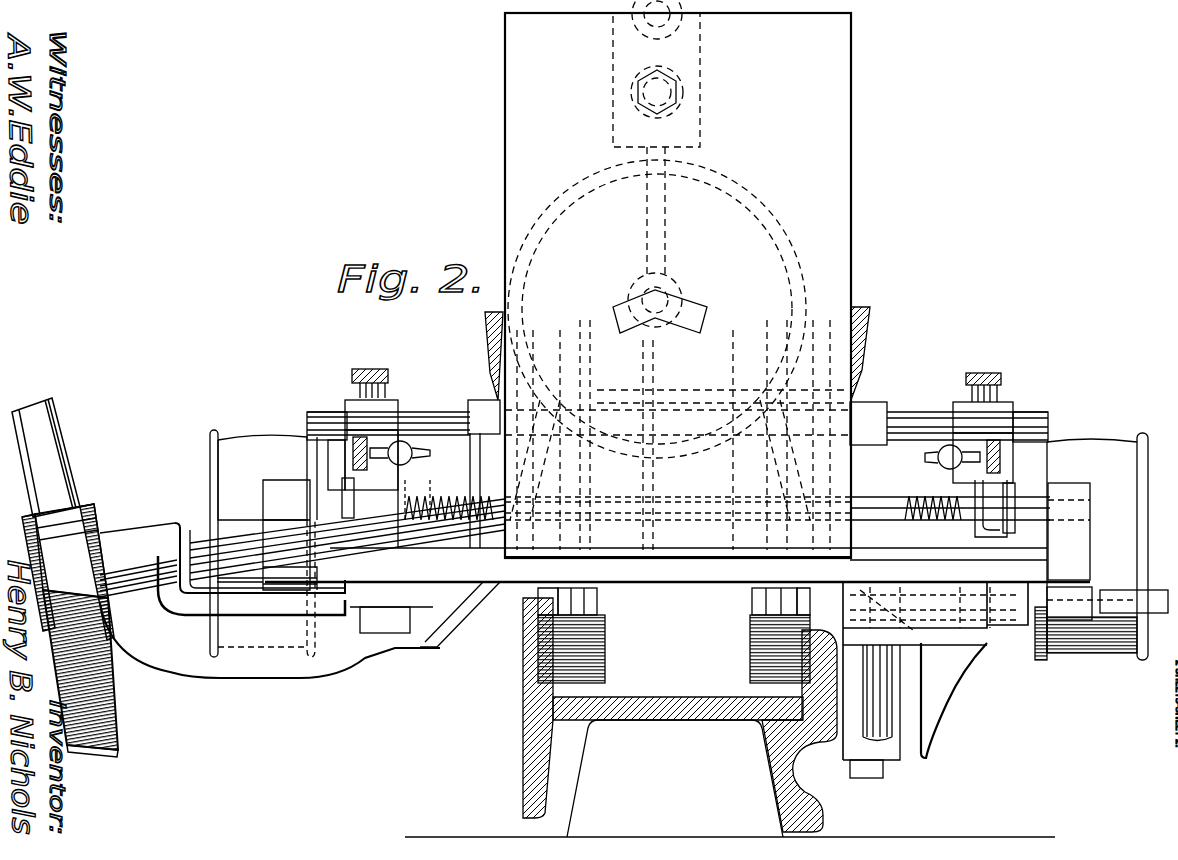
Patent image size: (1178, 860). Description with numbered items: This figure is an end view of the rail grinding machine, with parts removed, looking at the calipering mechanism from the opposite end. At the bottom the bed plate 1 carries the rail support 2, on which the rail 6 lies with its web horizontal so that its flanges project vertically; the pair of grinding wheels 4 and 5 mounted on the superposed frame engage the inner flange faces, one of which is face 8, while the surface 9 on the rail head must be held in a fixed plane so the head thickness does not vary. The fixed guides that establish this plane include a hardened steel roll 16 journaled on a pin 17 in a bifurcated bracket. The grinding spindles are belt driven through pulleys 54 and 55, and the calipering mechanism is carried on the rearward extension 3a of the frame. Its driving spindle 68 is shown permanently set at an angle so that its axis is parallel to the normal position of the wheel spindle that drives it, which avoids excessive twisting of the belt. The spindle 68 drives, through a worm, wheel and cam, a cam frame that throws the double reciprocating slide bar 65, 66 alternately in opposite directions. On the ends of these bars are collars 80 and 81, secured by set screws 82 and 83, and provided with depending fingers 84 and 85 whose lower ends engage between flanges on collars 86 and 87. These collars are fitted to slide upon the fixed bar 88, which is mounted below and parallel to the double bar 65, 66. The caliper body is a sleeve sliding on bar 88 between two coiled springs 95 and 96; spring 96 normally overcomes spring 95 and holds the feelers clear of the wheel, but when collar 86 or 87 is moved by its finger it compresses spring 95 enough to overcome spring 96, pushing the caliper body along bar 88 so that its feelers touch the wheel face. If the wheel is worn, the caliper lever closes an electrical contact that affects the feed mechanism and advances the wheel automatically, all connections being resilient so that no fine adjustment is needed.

The rearward extension of the frame 3a is at (848, 132).
The bed plate 1 is at (463, 837).
The rail support 2 is at (675, 778).
The grinding wheel 4 is at (752, 656).
The grinding wheel 5 is at (600, 652).
The rail 6 is at (680, 698).
The inner face of flange 8 is at (545, 648).
The surface on the head 9 is at (830, 702).
The hardened steel roll 16 is at (912, 757).
The pin 17 is at (866, 768).
The pulley 54 is at (1103, 442).
The pulley 55 is at (212, 430).
The slide bar 65 is at (917, 423).
The slide bar 66 is at (420, 425).
The spindle 68 is at (265, 530).
The collar 80 is at (1000, 405).
The collar 81 is at (352, 403).
The set screw 82 is at (984, 372).
The set screw 83 is at (380, 372).
The depending finger 84 is at (1003, 470).
The depending finger 85 is at (338, 470).
The collar 86 is at (1010, 490).
The collar 87 is at (345, 480).
The fixed bar 88 is at (317, 502).
The coiled spring 95 is at (418, 495).
The coiled spring 96 is at (515, 575).